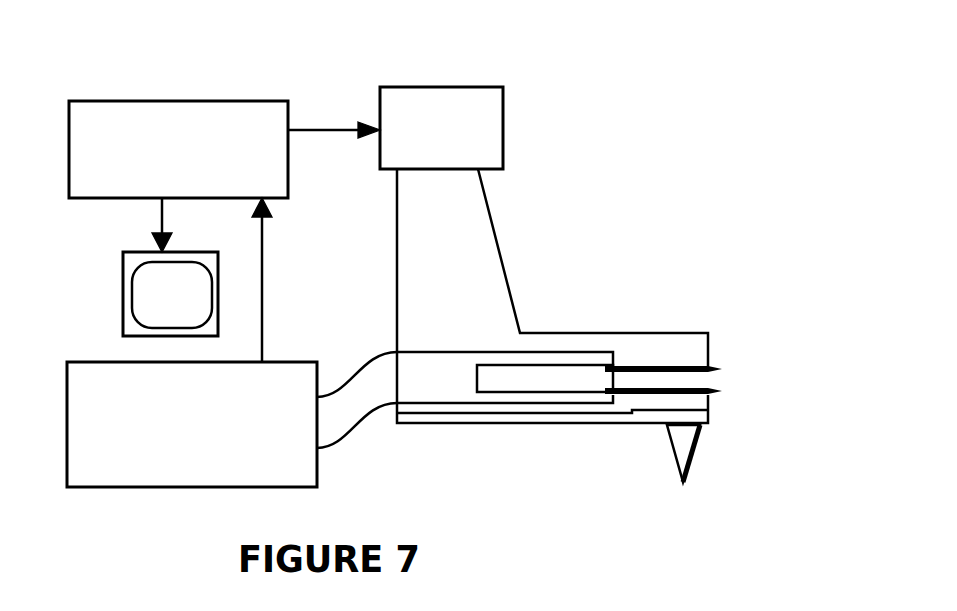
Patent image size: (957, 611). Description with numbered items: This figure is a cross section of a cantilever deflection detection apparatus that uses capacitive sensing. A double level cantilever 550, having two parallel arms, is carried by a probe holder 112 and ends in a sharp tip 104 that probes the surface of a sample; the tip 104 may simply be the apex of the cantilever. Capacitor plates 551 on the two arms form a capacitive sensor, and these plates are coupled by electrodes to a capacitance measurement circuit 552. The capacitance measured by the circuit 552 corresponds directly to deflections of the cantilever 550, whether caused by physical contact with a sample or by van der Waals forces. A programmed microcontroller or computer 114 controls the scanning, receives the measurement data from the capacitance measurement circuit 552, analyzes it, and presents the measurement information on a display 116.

The tip 104 is at (670, 433).
The probe holder 112 is at (442, 86).
The computer 114 is at (270, 181).
The display 116 is at (185, 252).
The double level cantilever 550 is at (621, 325).
The capacitor plates 551 is at (710, 369).
The capacitance measurement circuit 552 is at (295, 362).